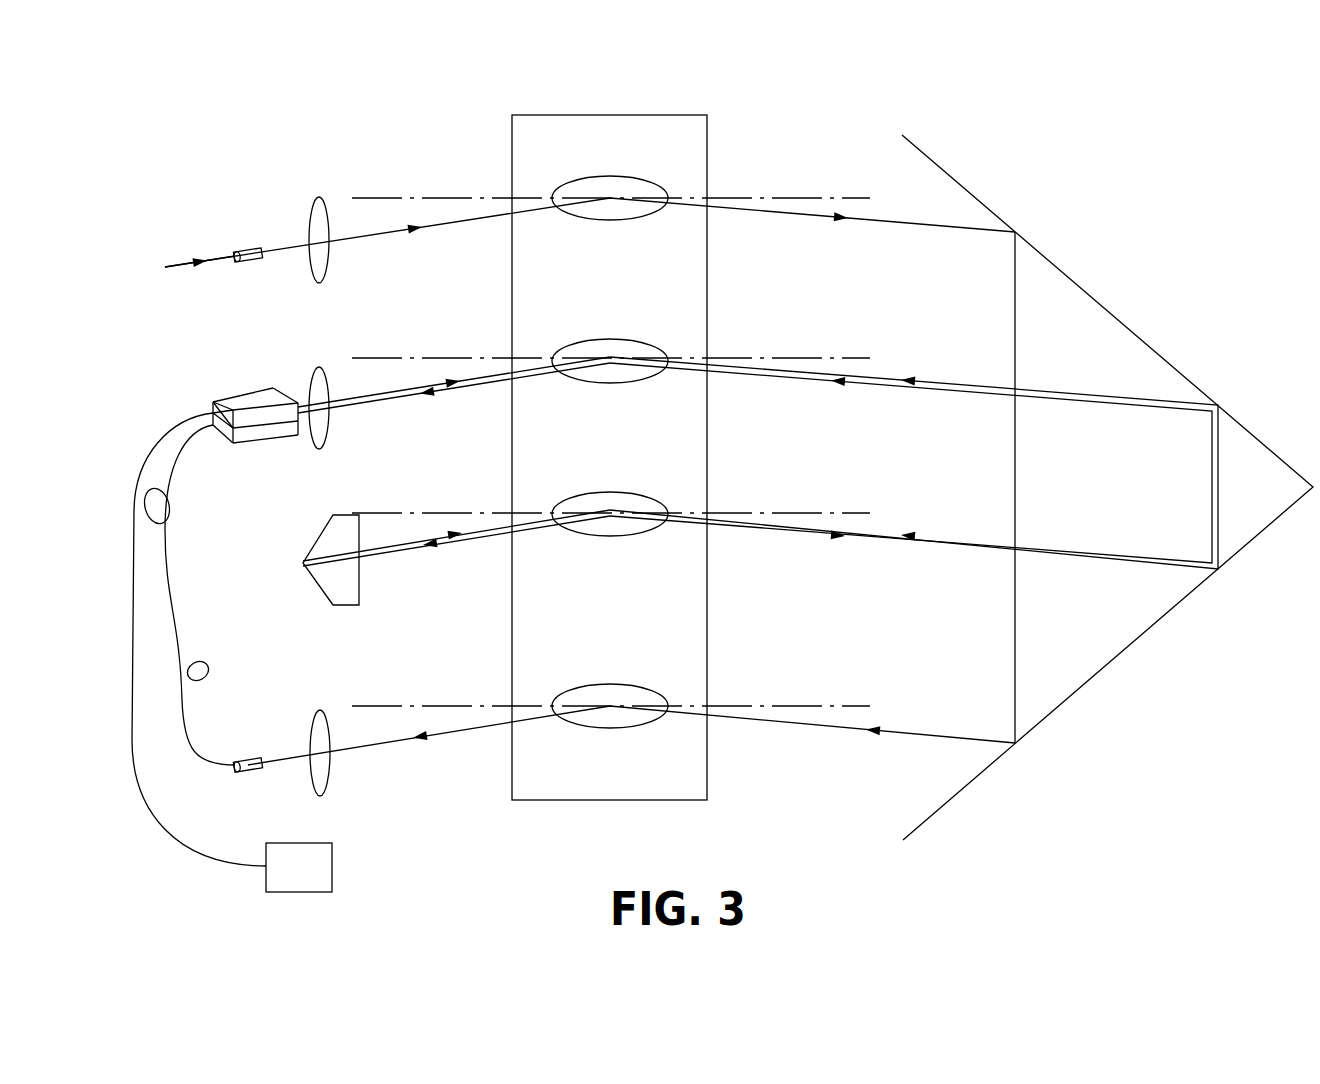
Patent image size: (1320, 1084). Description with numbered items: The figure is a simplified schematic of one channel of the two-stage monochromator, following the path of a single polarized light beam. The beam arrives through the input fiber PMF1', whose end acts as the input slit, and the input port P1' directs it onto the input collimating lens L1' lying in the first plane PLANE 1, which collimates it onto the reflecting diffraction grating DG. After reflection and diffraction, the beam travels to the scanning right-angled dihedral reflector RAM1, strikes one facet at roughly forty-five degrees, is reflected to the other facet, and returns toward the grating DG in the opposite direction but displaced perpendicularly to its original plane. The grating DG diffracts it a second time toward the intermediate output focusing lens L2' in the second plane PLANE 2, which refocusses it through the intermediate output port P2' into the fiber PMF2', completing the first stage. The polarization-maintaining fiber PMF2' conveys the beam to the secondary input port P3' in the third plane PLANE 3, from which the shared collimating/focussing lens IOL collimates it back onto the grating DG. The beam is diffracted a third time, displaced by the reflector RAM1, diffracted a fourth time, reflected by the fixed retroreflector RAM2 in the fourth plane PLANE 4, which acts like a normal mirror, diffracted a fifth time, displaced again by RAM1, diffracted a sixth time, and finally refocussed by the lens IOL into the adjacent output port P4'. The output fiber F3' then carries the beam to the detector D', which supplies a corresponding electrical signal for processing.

The reflecting diffraction grating DG is at (609, 433).
The first plane PLANE 1 is at (477, 197).
The second plane PLANE 2 is at (477, 705).
The third plane PLANE 3 is at (477, 357).
The fourth plane PLANE 4 is at (477, 512).
The scanning right-angled dihedral reflector RAM1 is at (1107, 475).
The fixed right-angled dihedral retroreflector RAM2 is at (282, 561).
The input collimating lens L1' is at (304, 226).
The intermediate output focusing lens L2' is at (344, 761).
The shared collimating/focussing lens IOL is at (294, 387).
The input fiber PMF1' is at (194, 242).
The intermediate fiber PMF2' is at (230, 595).
The input port P1' is at (254, 280).
The intermediate output port P2' is at (248, 790).
The secondary input port P3' is at (256, 451).
The output port P4' is at (208, 361).
The output fiber F3' is at (199, 658).
The detector D' is at (299, 867).